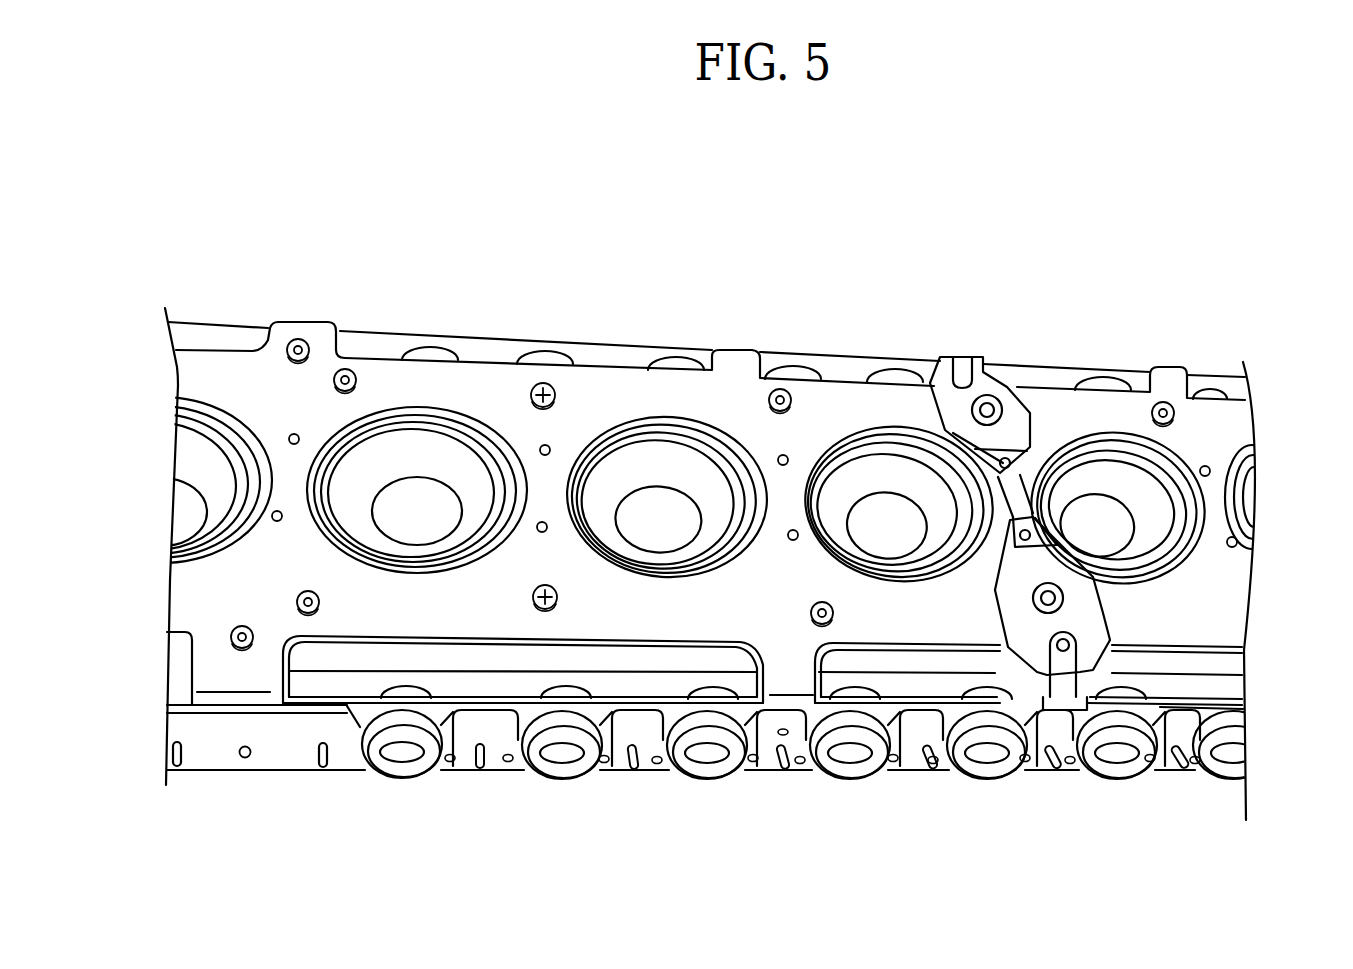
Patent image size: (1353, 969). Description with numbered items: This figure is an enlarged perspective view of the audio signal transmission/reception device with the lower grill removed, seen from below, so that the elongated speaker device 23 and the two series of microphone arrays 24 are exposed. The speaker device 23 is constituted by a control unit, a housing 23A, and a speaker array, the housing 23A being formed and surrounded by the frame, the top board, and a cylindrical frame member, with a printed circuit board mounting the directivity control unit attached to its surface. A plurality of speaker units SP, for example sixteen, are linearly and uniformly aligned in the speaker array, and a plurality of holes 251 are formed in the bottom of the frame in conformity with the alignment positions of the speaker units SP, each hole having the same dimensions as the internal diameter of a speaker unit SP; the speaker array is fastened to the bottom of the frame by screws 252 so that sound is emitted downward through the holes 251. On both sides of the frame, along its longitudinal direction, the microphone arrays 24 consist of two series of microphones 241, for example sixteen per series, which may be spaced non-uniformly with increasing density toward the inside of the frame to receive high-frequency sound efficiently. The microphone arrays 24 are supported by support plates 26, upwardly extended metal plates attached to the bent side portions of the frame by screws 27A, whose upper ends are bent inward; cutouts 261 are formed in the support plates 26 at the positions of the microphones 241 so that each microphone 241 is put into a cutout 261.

The speaker device 23 is at (1236, 657).
The housing 23A is at (1244, 556).
The microphone arrays 24 is at (487, 342).
The microphones 241 is at (433, 352).
The holes 251 is at (243, 533).
The screws 252 is at (808, 610).
The support plates 26 is at (272, 752).
The cutouts 261 is at (478, 768).
The screws 27A is at (246, 760).
The speaker units SP is at (222, 428).